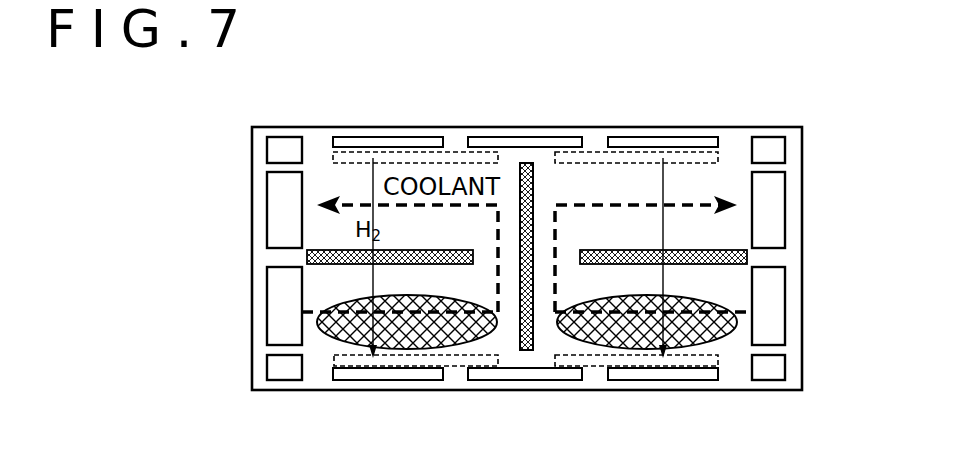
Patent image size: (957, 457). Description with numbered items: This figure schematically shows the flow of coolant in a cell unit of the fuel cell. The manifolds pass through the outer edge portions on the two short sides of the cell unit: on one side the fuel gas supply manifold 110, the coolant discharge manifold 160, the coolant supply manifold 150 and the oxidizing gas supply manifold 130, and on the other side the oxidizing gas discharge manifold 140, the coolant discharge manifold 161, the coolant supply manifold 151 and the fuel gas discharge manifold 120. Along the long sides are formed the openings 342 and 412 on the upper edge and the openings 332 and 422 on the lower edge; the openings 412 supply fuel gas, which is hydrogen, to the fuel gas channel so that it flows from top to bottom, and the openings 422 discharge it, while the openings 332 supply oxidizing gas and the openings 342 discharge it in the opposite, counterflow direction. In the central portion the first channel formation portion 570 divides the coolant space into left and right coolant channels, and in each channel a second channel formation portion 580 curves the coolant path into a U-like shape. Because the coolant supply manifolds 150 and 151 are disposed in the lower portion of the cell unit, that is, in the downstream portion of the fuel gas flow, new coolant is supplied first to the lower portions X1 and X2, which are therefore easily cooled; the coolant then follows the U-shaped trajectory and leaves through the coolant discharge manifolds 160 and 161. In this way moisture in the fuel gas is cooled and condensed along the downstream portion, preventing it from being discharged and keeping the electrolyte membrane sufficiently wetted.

The fuel gas supply manifold 110 is at (283, 145).
The fuel gas discharge manifold 120 is at (772, 373).
The oxidizing gas supply manifold 130 is at (282, 373).
The oxidizing gas discharge manifold 140 is at (770, 145).
The coolant supply manifold 150 is at (278, 296).
The coolant supply manifold 151 is at (774, 295).
The coolant discharge manifold 160 is at (278, 211).
The coolant discharge manifold 161 is at (774, 208).
The openings 332 is at (362, 374).
The openings 342 is at (360, 142).
The openings 412 is at (457, 160).
The openings 422 is at (455, 360).
The first channel formation portion 570 is at (534, 180).
The second channel formation portion 580 is at (308, 257).
The lower portion of the cell unit X1 is at (322, 342).
The lower portion of the cell unit X2 is at (735, 326).